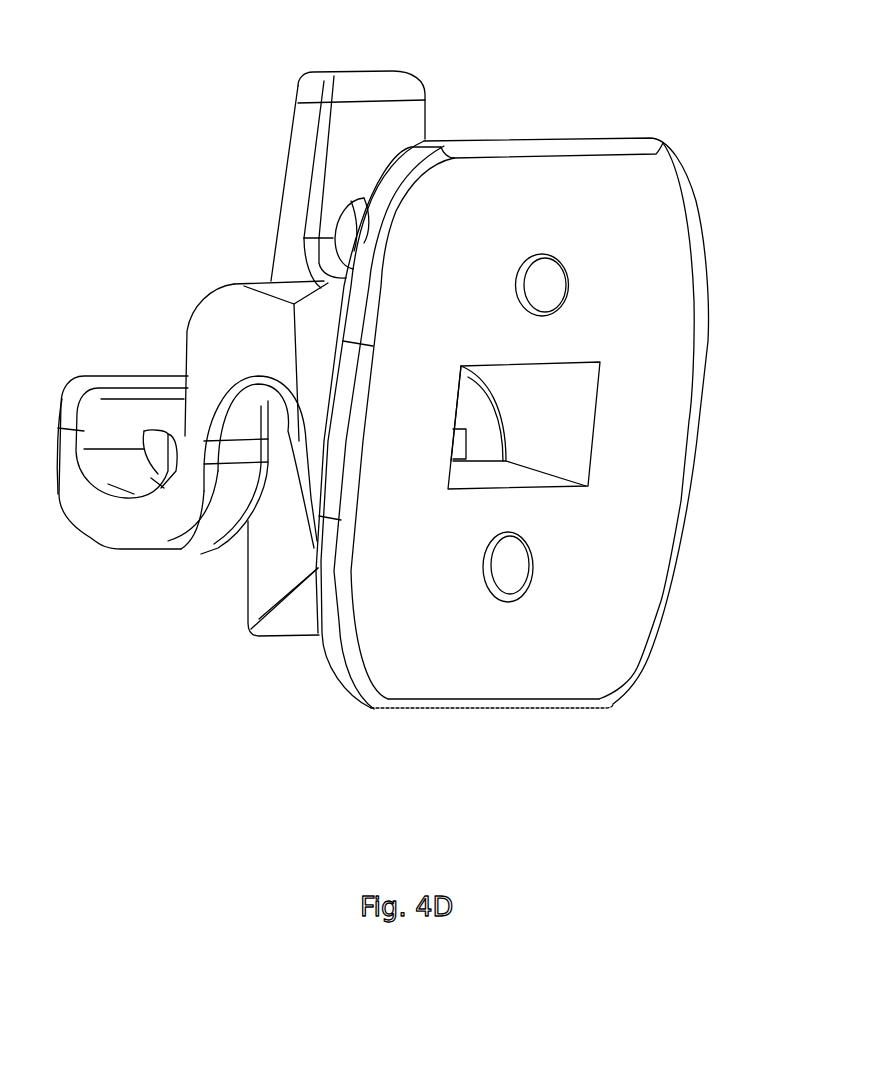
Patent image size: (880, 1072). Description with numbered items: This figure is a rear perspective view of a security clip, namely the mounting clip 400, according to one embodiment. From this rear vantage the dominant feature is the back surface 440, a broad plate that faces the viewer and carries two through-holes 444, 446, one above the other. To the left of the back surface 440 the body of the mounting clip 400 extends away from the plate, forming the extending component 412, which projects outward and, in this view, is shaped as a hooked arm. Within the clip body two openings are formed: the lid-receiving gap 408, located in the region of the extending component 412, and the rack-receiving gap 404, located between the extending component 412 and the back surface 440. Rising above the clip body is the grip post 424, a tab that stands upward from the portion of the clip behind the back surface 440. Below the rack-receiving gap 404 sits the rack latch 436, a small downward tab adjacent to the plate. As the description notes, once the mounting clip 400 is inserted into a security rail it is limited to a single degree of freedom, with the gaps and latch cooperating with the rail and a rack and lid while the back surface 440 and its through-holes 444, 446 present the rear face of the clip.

The mounting clip 400 is at (476, 158).
The rack-receiving gap 404 is at (264, 399).
The lid-receiving gap 408 is at (150, 489).
The extending component 412 is at (80, 395).
The grip post 424 is at (343, 133).
The rack latch 436 is at (279, 555).
The back surface 440 is at (553, 190).
The through-hole 444 is at (540, 283).
The through-hole 446 is at (511, 565).